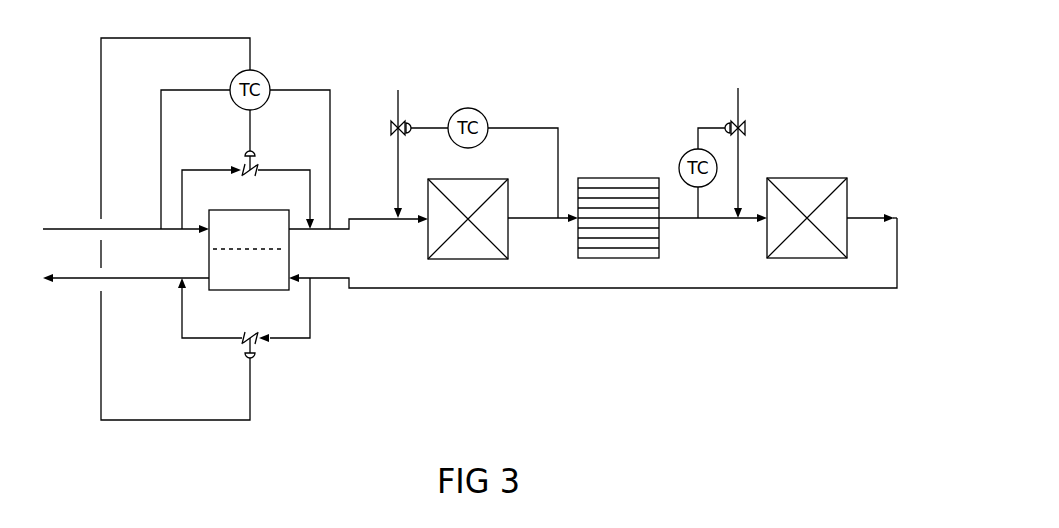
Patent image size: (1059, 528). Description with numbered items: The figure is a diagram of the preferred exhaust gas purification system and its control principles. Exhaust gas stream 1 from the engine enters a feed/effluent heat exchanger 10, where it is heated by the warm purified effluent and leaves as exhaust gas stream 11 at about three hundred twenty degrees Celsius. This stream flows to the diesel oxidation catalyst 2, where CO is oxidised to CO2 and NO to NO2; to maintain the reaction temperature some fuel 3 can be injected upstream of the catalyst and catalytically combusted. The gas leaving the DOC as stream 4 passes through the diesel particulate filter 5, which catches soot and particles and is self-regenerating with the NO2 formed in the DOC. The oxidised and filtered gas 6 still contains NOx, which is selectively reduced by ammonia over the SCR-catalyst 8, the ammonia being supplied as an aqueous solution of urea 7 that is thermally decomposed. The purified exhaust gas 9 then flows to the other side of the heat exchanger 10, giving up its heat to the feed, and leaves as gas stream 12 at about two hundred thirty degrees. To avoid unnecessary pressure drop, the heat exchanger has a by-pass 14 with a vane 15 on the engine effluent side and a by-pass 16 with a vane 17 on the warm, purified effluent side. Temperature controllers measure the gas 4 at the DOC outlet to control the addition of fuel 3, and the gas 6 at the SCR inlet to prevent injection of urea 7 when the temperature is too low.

The exhaust gas stream 1 is at (126, 216).
The diesel oxidation catalyst 2 is at (480, 197).
The fuel 3 is at (405, 105).
The stream 4 is at (543, 207).
The diesel particulate filter 5 is at (605, 197).
The oxidised and filtered gas 6 is at (713, 206).
The urea 7 is at (742, 107).
The SCR-catalyst 8 is at (807, 197).
The purified exhaust gas 9 is at (872, 206).
The feed/effluent heat exchanger 10 is at (243, 229).
The exhaust gas stream 11 is at (358, 210).
The gas stream 12 is at (126, 297).
The by-pass 14 is at (192, 163).
The vane 15 is at (257, 145).
The by-pass 16 is at (264, 310).
The vane 17 is at (242, 360).